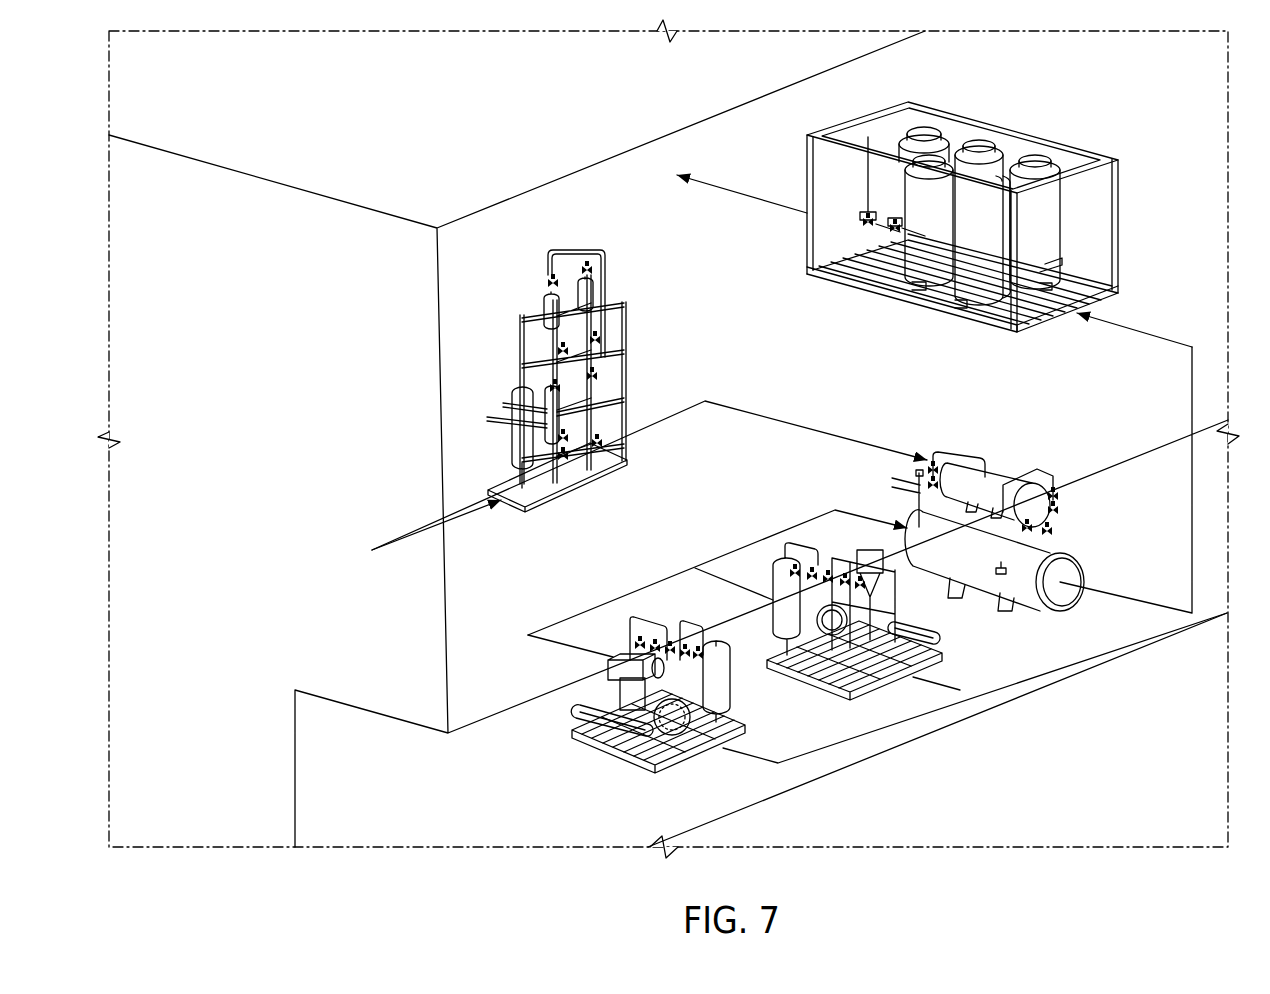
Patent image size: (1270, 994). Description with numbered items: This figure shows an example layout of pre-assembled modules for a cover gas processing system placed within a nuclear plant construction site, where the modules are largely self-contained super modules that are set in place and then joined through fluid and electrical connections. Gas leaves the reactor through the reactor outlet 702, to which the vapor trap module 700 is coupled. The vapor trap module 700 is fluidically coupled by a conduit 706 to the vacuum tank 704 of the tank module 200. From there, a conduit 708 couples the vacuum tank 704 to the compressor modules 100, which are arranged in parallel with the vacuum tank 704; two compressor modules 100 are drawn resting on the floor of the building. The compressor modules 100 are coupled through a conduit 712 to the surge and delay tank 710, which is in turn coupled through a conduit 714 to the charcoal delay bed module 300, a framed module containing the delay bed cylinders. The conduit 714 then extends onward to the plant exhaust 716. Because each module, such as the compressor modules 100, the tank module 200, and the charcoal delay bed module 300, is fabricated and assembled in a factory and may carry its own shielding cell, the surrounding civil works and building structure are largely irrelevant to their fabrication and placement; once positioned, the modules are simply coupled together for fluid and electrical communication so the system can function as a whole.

The compressor module 100 is at (588, 765).
The tank module 200 is at (1046, 548).
The charcoal delay bed module 300 is at (1036, 134).
The vapor trap module 700 is at (525, 297).
The reactor outlet 702 is at (408, 530).
The vacuum tank 704 is at (967, 480).
The conduit 706 is at (832, 432).
The conduit 708 is at (898, 719).
The surge and delay tank 710 is at (1000, 575).
The conduit 712 is at (621, 596).
The conduit 714 is at (1118, 325).
The plant exhaust 716 is at (712, 183).